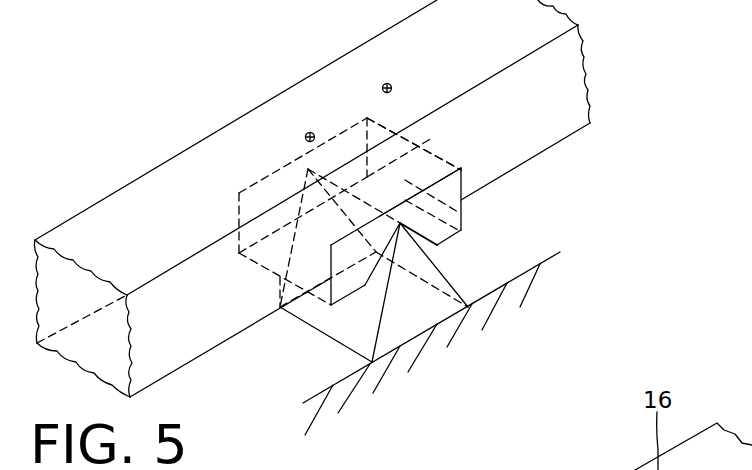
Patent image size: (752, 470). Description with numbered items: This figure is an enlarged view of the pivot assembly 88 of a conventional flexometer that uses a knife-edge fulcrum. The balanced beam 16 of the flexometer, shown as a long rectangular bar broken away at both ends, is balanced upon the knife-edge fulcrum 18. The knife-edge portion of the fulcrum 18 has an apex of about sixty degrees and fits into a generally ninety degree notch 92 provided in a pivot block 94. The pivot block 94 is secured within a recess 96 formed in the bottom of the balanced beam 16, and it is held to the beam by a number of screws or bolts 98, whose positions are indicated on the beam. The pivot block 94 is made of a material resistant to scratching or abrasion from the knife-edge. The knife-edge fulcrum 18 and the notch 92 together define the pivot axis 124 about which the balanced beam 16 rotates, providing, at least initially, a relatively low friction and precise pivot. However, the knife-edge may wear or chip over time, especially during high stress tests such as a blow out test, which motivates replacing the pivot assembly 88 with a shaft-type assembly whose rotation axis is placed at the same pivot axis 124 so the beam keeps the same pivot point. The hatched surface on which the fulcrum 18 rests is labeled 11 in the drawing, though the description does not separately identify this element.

The balanced beam 16 is at (582, 130).
The pivot assembly 88 is at (500, 207).
The pivot block 94 is at (462, 217).
The recess 96 is at (445, 176).
The pivot axis 124 is at (426, 135).
The notch 92 is at (371, 290).
The knife-edge fulcrum 18 is at (428, 307).
The soil 11 is at (497, 317).
The screws or bolts 98 is at (309, 132).